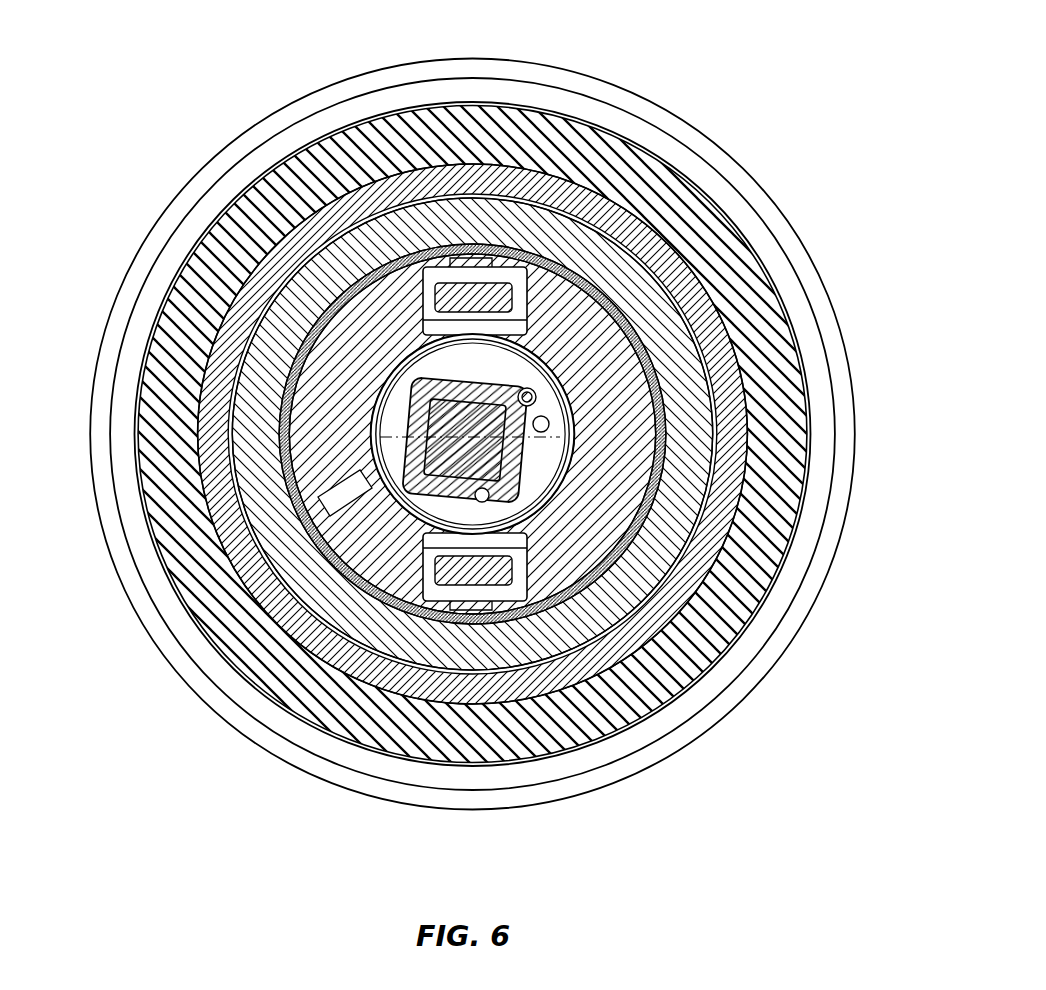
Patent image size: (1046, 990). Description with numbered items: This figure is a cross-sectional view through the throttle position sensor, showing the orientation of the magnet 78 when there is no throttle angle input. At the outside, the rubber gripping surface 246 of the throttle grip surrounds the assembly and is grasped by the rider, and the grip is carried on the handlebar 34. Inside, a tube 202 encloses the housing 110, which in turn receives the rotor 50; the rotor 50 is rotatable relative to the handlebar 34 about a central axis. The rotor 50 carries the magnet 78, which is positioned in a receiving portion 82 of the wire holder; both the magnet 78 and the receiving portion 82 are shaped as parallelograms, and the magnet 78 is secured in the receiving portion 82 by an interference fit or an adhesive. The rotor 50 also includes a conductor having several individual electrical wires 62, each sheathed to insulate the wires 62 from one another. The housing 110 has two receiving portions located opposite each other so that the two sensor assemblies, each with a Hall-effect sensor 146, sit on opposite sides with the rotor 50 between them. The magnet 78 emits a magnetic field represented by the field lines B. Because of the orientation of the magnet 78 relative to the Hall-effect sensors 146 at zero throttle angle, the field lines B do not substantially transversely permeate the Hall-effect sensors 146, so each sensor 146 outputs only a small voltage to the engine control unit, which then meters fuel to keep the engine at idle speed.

The rubber gripping surface 246 is at (628, 165).
The handlebar 34 is at (660, 327).
The tube 202 is at (690, 433).
The electrical wires 62 is at (630, 400).
The magnet 78 is at (300, 525).
The rotor 50 is at (330, 535).
The Hall-effect sensor 146 is at (489, 292).
The receiving portion 82 is at (360, 428).
The housing 110 is at (370, 415).
The field lines B is at (300, 260).